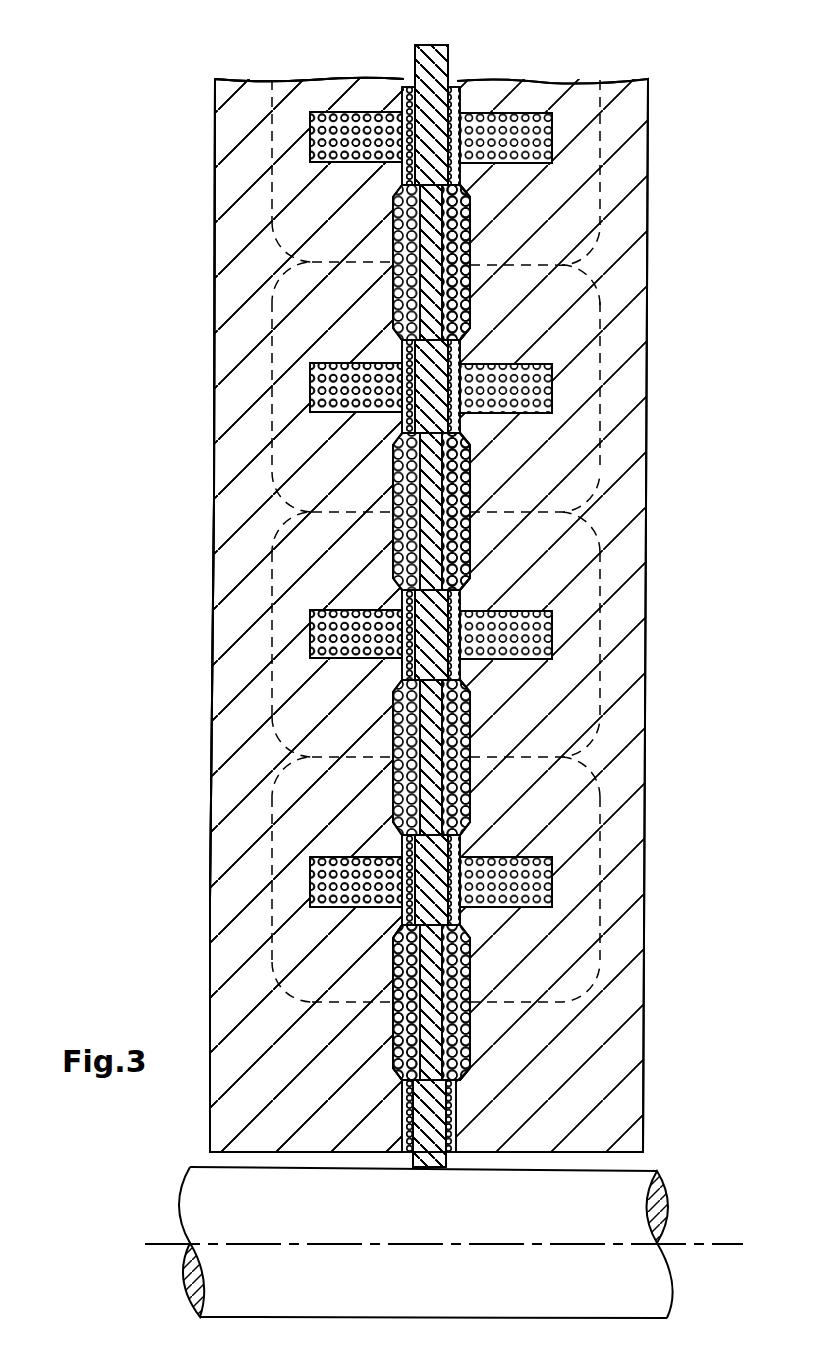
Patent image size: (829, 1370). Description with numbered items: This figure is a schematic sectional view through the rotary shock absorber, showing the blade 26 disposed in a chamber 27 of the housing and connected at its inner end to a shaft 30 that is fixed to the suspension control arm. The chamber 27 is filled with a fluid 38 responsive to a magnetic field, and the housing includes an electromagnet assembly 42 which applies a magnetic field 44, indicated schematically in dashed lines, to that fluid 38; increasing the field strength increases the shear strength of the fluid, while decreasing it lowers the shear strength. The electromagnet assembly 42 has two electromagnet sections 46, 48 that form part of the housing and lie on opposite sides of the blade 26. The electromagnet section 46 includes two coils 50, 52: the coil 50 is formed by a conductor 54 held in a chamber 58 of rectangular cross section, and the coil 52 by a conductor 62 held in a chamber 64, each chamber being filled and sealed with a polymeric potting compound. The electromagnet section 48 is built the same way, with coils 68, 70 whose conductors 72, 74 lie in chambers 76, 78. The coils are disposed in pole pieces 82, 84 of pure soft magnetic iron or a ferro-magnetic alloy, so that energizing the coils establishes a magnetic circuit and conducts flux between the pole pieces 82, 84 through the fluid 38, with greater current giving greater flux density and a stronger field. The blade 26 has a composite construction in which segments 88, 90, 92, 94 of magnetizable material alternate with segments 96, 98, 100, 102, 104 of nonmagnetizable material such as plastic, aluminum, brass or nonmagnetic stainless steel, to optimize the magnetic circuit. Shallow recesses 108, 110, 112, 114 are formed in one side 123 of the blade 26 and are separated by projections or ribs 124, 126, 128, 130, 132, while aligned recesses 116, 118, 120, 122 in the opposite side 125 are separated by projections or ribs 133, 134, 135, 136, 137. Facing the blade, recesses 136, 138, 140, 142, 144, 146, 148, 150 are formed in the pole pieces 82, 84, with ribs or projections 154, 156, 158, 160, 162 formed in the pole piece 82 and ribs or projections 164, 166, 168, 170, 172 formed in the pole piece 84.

The blade 26 is at (452, 62).
The chamber 27 is at (463, 270).
The shaft 30 is at (671, 1200).
The fluid responsive to magnetic field 38 is at (466, 510).
The electromagnet assembly 42 is at (212, 97).
The magnetic field 44 is at (274, 305).
The electromagnet section 46 is at (212, 209).
The electromagnet section 48 is at (650, 120).
The coil 50 is at (332, 135).
The coil 52 is at (325, 640).
The conductor 54 is at (348, 145).
The chamber 58 is at (327, 111).
The conductor 62 is at (337, 660).
The chamber 64 is at (311, 613).
The coil 68 is at (557, 143).
The coil 70 is at (558, 658).
The conductor 72 is at (503, 148).
The conductor 74 is at (512, 644).
The chamber 76 is at (560, 108).
The chamber 78 is at (553, 613).
The pole piece 82 is at (225, 323).
The pole piece 84 is at (650, 322).
The segment of magnetizable material 88 is at (424, 263).
The segment of magnetizable material 90 is at (428, 510).
The segment of magnetizable material 92 is at (420, 756).
The segment of magnetizable material 94 is at (422, 990).
The segment of nonmagnetizable material 96 is at (458, 172).
The segment of nonmagnetizable material 98 is at (467, 443).
The segment of nonmagnetizable material 100 is at (468, 690).
The segment of nonmagnetizable material 102 is at (465, 922).
The segment of nonmagnetizable material 104 is at (453, 1118).
The shallow recess 108 is at (404, 236).
The shallow recess 110 is at (399, 474).
The shallow recess 112 is at (420, 720).
The shallow recess 114 is at (394, 970).
The shallow recess 116 is at (474, 296).
The shallow recess 118 is at (474, 551).
The shallow recess 120 is at (471, 781).
The shallow recess 122 is at (470, 1017).
The side of blade 123 is at (412, 1052).
The projection or rib 124 is at (413, 163).
The side of blade 125 is at (450, 1003).
The projection or rib 126 is at (414, 420).
The projection or rib 128 is at (413, 667).
The projection or rib 130 is at (401, 923).
The projection or rib 132 is at (401, 1117).
The projection or rib 133 is at (430, 100).
The projection or rib 134 is at (459, 310).
The projection or rib 135 is at (464, 583).
The projection or rib 136 is at (396, 300).
The projection or rib 137 is at (455, 1132).
The recess 138 is at (393, 549).
The recess 140 is at (393, 798).
The recess 142 is at (394, 1042).
The recess 144 is at (480, 304).
The recess 146 is at (478, 571).
The recess 148 is at (471, 804).
The recess 150 is at (468, 1060).
The projection or rib 154 is at (395, 102).
The projection or rib 156 is at (405, 352).
The projection or rib 158 is at (402, 594).
The projection or rib 160 is at (394, 847).
The projection or rib 162 is at (398, 1088).
The rib or projection 164 is at (470, 100).
The rib or projection 166 is at (468, 356).
The rib or projection 168 is at (470, 604).
The rib or projection 170 is at (470, 845).
The rib or projection 172 is at (464, 1093).